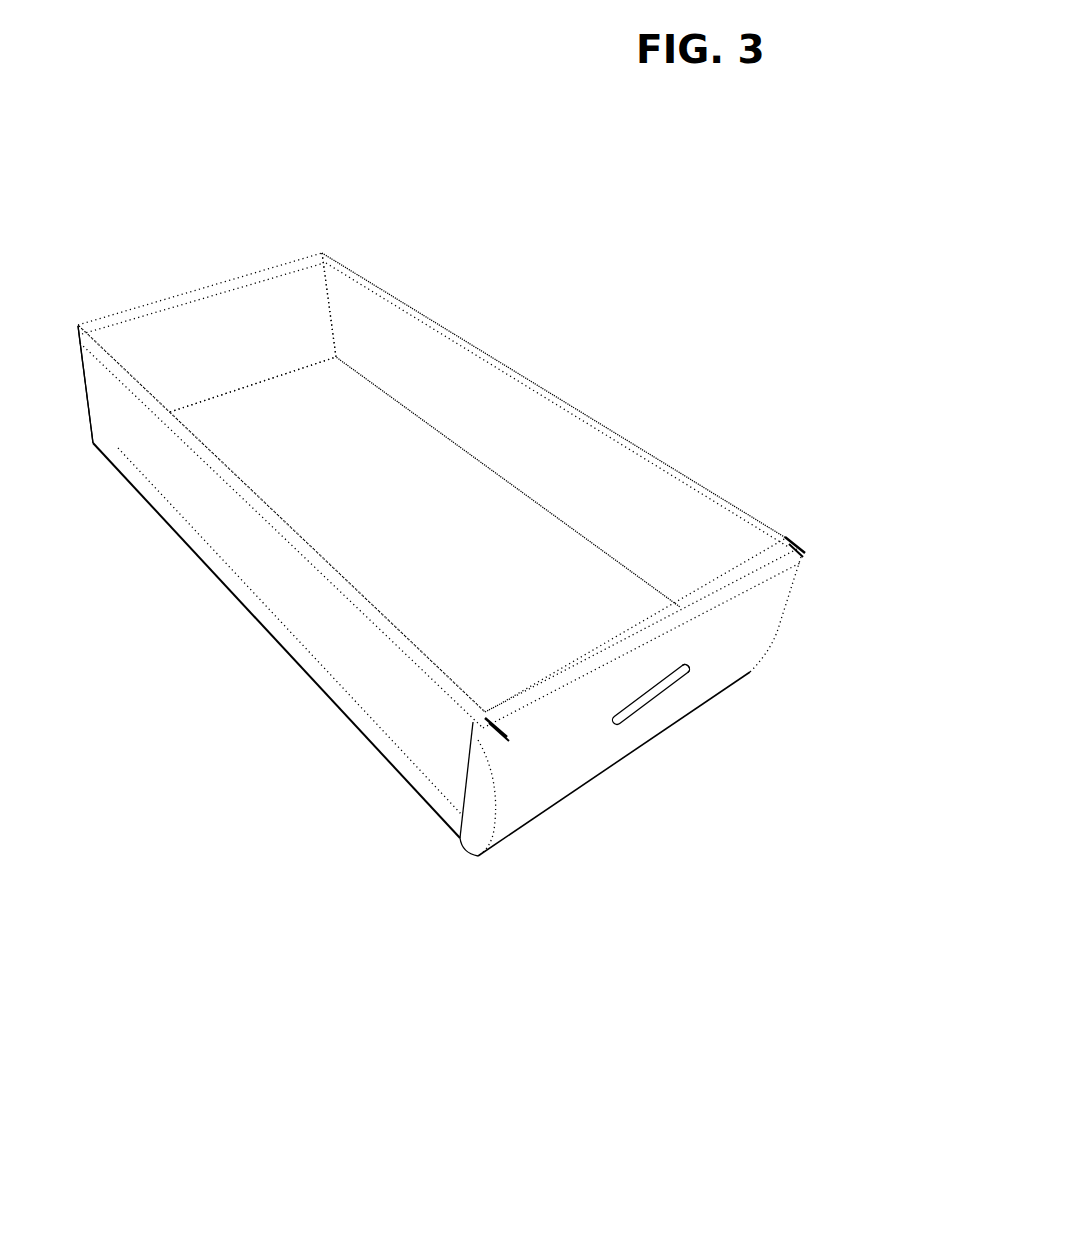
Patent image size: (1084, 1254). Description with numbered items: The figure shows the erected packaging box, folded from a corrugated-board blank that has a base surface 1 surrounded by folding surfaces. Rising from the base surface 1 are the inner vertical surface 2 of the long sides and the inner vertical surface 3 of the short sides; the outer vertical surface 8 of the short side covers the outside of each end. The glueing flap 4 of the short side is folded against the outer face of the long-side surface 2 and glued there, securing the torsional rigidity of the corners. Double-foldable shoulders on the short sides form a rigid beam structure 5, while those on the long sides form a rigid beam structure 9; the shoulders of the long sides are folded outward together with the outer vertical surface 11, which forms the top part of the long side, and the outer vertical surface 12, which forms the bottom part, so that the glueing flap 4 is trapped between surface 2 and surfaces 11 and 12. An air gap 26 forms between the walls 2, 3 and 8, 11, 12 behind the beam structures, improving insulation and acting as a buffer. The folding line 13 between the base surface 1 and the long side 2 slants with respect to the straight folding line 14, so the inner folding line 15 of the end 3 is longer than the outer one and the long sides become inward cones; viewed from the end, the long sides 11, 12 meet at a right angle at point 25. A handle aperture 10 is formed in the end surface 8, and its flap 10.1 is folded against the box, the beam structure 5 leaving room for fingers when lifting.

The base surface 1 is at (402, 500).
The inner vertical surface of the long sides 2 is at (603, 493).
The inner vertical surface of the short sides 3 is at (220, 340).
The glueing flap 4 is at (478, 780).
The beam structure 5 is at (577, 680).
The outer vertical surface of the short side 8 is at (547, 763).
The beam structure 9 is at (543, 392).
The handle aperture 10 is at (653, 697).
The flap 10.1 is at (688, 677).
The outer vertical surface of the long side 11 is at (238, 523).
The outer vertical surface of the long side 12 is at (297, 653).
The folding line 13 is at (327, 300).
The folding line 14 is at (525, 486).
The inner folding line 15 is at (260, 383).
The point 25 is at (788, 536).
The air gap 26 is at (487, 868).